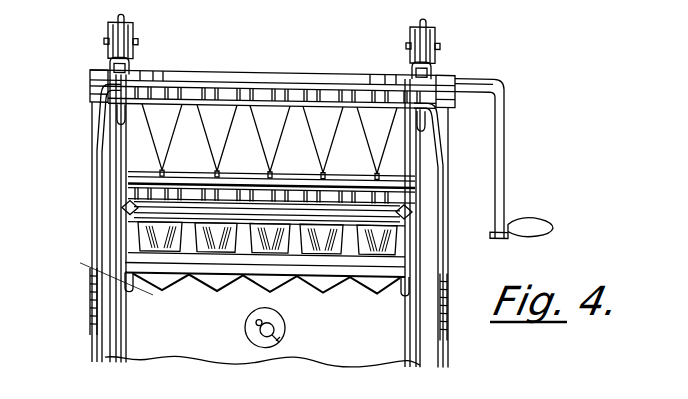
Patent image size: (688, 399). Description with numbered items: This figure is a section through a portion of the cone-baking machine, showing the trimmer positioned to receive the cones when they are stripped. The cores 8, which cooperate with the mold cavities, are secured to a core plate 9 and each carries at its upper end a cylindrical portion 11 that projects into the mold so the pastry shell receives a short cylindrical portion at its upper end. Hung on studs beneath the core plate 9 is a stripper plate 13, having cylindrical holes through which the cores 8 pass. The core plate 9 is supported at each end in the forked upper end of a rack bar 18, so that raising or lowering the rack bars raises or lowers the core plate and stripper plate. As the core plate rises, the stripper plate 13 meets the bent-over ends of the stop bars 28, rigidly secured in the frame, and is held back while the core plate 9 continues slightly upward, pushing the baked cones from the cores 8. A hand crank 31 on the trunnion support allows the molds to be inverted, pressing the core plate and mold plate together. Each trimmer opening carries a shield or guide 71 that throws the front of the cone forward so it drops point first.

The cores 8 is at (222, 122).
The core plate 9 is at (268, 92).
The cylindrical portion 11 is at (217, 94).
The stripper plate 13 is at (292, 106).
The rack bar 18 is at (436, 212).
The stop bars 28 is at (96, 170).
The hand crank 31 is at (499, 150).
The shield or guide 71 is at (381, 247).